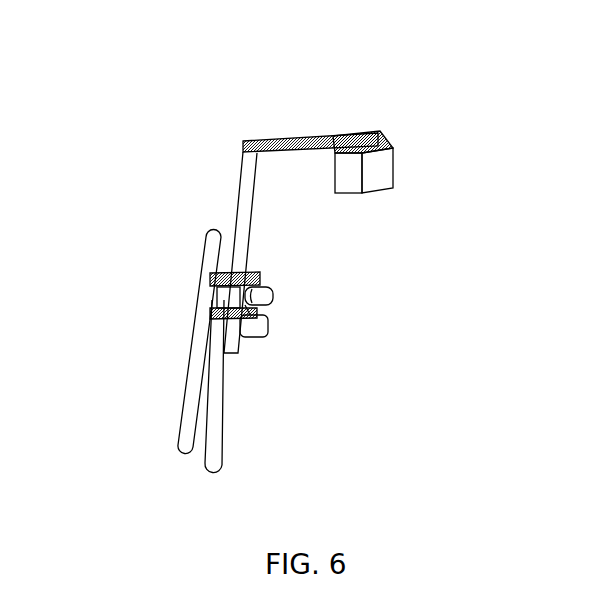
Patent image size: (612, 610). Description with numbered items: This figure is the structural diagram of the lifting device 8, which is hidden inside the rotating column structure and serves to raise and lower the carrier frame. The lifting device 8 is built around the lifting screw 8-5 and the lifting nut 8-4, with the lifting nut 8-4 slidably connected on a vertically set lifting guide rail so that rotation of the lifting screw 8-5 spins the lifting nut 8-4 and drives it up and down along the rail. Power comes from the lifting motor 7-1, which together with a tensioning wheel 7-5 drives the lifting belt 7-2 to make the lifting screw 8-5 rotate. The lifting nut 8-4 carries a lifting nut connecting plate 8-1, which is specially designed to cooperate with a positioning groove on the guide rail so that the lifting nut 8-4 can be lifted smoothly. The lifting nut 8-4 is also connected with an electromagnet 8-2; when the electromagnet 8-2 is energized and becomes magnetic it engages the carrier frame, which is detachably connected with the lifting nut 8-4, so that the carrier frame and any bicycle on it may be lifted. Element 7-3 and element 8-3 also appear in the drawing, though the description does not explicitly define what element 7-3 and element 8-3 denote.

The lifting device 8 is at (138, 107).
The lifting motor 7-1 is at (378, 168).
The lifting belt 7-2 is at (352, 131).
The guide rod 7-3 is at (207, 257).
The tensioning wheel 7-5 is at (381, 140).
The lifting nut connecting plate 8-1 is at (205, 291).
The electromagnet 8-2 is at (258, 343).
The support post 8-3 is at (248, 226).
The lifting nut 8-4 is at (243, 278).
The lifting screw 8-5 is at (260, 312).